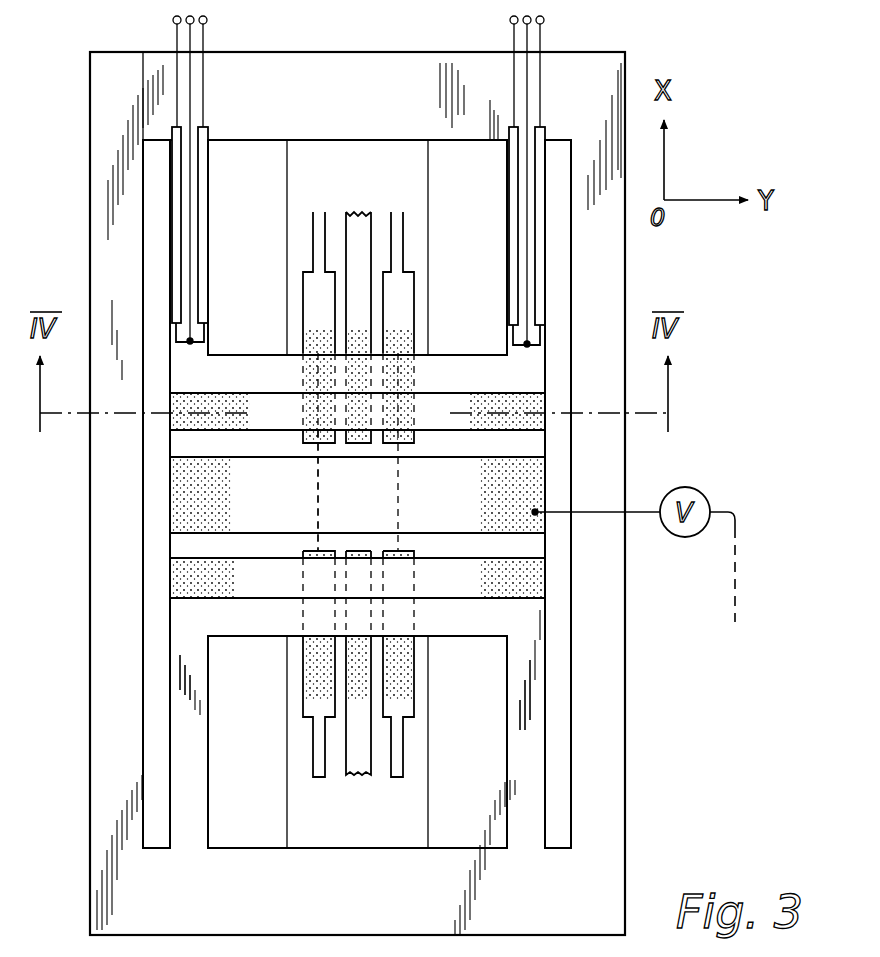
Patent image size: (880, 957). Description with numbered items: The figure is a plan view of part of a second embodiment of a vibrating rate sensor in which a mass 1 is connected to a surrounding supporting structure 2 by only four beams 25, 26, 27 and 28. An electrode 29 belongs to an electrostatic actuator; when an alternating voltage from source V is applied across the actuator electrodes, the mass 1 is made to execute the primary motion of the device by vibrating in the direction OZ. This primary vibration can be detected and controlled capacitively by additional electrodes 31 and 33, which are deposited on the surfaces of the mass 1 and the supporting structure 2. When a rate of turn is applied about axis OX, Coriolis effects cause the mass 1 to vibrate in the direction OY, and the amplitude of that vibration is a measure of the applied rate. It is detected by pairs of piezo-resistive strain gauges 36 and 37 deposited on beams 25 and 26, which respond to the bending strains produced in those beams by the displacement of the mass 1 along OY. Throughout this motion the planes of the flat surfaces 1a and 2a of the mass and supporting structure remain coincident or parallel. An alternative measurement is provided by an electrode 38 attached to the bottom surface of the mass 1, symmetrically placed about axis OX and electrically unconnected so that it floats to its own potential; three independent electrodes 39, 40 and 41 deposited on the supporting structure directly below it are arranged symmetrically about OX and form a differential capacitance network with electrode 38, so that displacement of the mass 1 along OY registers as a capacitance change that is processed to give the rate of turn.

The mass 1 is at (472, 350).
The flat surface of mass 1a is at (472, 622).
The supporting structure 2 is at (628, 766).
The flat surface of supporting structure 2a is at (610, 722).
The beam 25 is at (190, 306).
The beam 26 is at (522, 333).
The beam 27 is at (193, 716).
The beam 28 is at (525, 685).
The electrode 29 is at (535, 482).
The additional electrode 31 is at (517, 402).
The additional electrode 33 is at (530, 582).
The piezo-resistive strain gauge pair 36 is at (176, 143).
The piezo-resistive strain gauge pair 37 is at (515, 148).
The electrode 38 is at (316, 546).
The independent electrode 39 is at (313, 230).
The independent electrode 40 is at (358, 212).
The independent electrode 41 is at (403, 230).